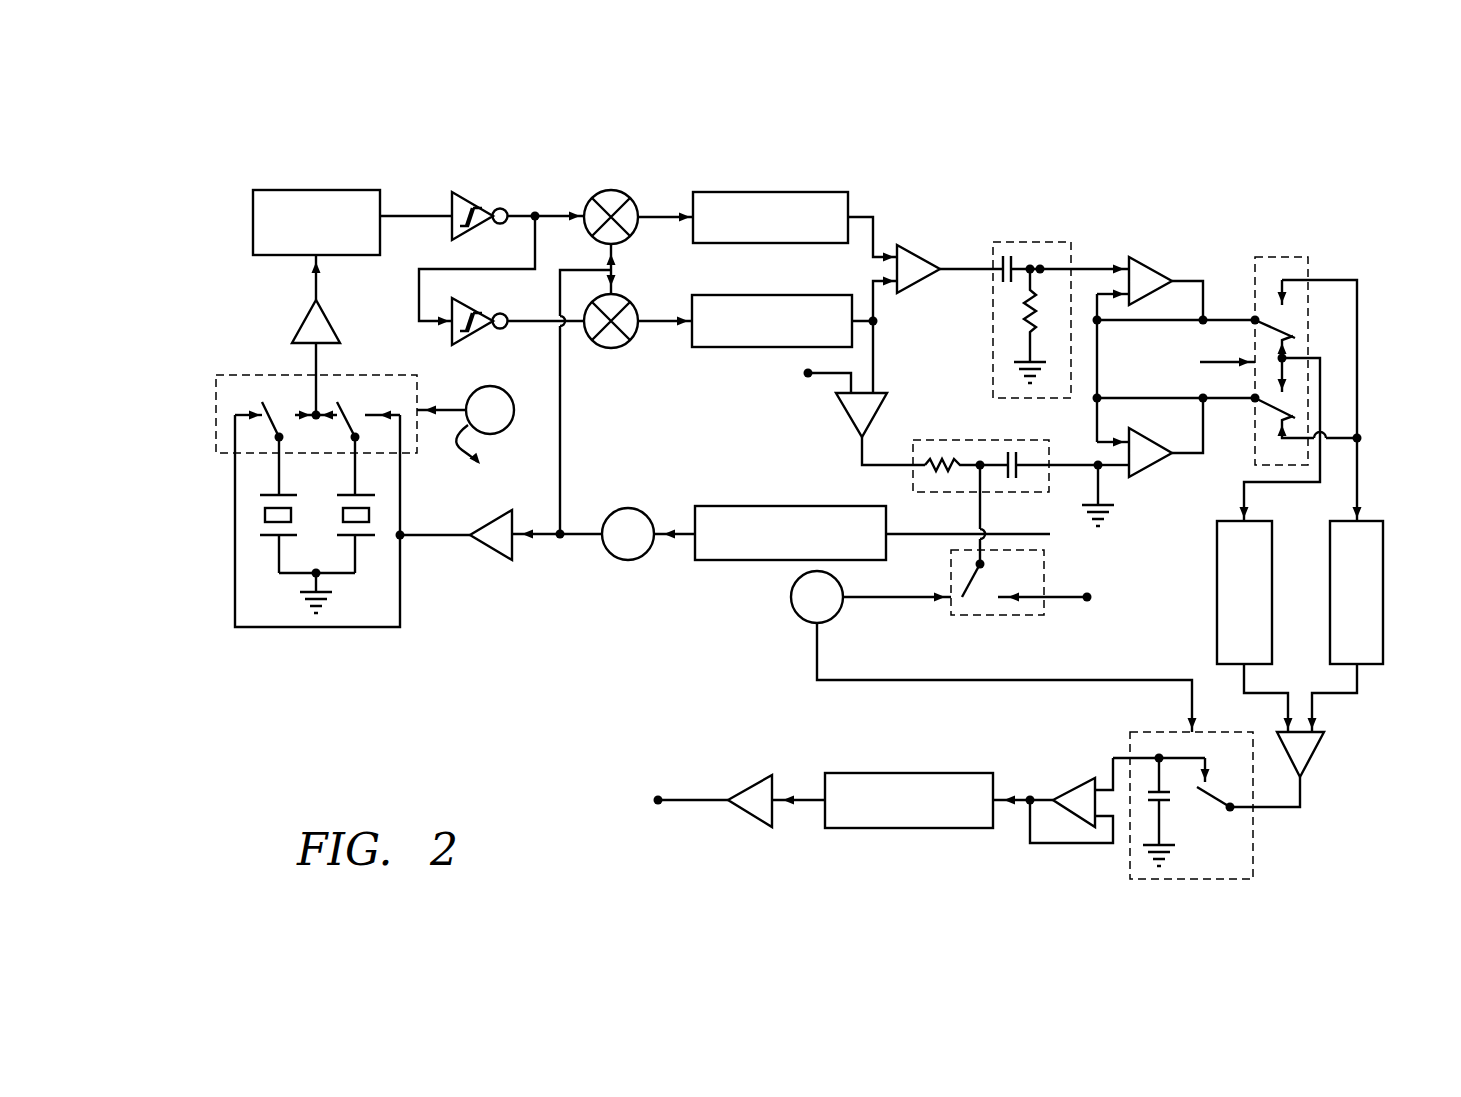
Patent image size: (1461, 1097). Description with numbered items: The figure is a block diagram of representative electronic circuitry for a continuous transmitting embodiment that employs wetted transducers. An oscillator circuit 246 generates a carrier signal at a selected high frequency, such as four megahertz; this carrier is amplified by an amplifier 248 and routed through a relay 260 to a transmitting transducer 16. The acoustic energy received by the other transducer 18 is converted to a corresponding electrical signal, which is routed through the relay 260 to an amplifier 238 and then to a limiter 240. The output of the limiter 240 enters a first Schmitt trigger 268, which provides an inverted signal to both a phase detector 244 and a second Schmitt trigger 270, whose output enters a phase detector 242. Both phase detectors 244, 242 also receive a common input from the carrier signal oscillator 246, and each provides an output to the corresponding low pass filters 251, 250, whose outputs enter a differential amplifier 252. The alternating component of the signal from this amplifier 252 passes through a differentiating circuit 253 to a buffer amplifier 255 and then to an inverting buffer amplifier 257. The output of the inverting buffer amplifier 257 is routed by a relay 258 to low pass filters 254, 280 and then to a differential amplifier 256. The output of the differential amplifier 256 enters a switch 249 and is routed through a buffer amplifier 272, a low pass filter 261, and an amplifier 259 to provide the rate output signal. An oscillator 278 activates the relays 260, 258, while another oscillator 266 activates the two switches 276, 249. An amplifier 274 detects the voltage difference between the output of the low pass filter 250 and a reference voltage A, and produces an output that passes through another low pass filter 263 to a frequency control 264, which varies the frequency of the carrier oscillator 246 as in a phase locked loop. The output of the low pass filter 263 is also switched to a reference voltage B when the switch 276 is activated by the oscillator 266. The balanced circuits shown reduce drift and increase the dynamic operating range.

The transmitting transducer 16 is at (268, 538).
The transducer 18 is at (368, 540).
The amplifier 238 is at (300, 318).
The limiter 240 is at (300, 190).
The phase detector 242 is at (603, 348).
The phase detector 244 is at (620, 245).
The oscillator circuit 246 is at (628, 560).
The amplifier 248 is at (505, 560).
The switch 249 is at (1253, 845).
The low pass filter 250 is at (700, 347).
The low pass filter 251 is at (775, 192).
The differential amplifier 252 is at (925, 288).
The differentiating circuit 253 is at (1030, 242).
The low pass filter 254 is at (1217, 618).
The buffer amplifier 255 is at (1160, 272).
The differential amplifier 256 is at (1313, 757).
The inverting buffer amplifier 257 is at (1150, 472).
The relay 258 is at (1300, 257).
The amplifier 259 is at (745, 788).
The relay 260 is at (350, 375).
The low pass filter 261 is at (905, 773).
The low pass filter 263 is at (997, 440).
The frequency control 264 is at (740, 560).
The oscillator 266 is at (800, 613).
The first Schmitt trigger 268 is at (470, 192).
The second Schmitt trigger 270 is at (480, 345).
The buffer amplifier 272 is at (1078, 790).
The amplifier 274 is at (848, 428).
The switch 276 is at (1028, 615).
The oscillator 278 is at (512, 425).
The low pass filter 280 is at (1385, 664).